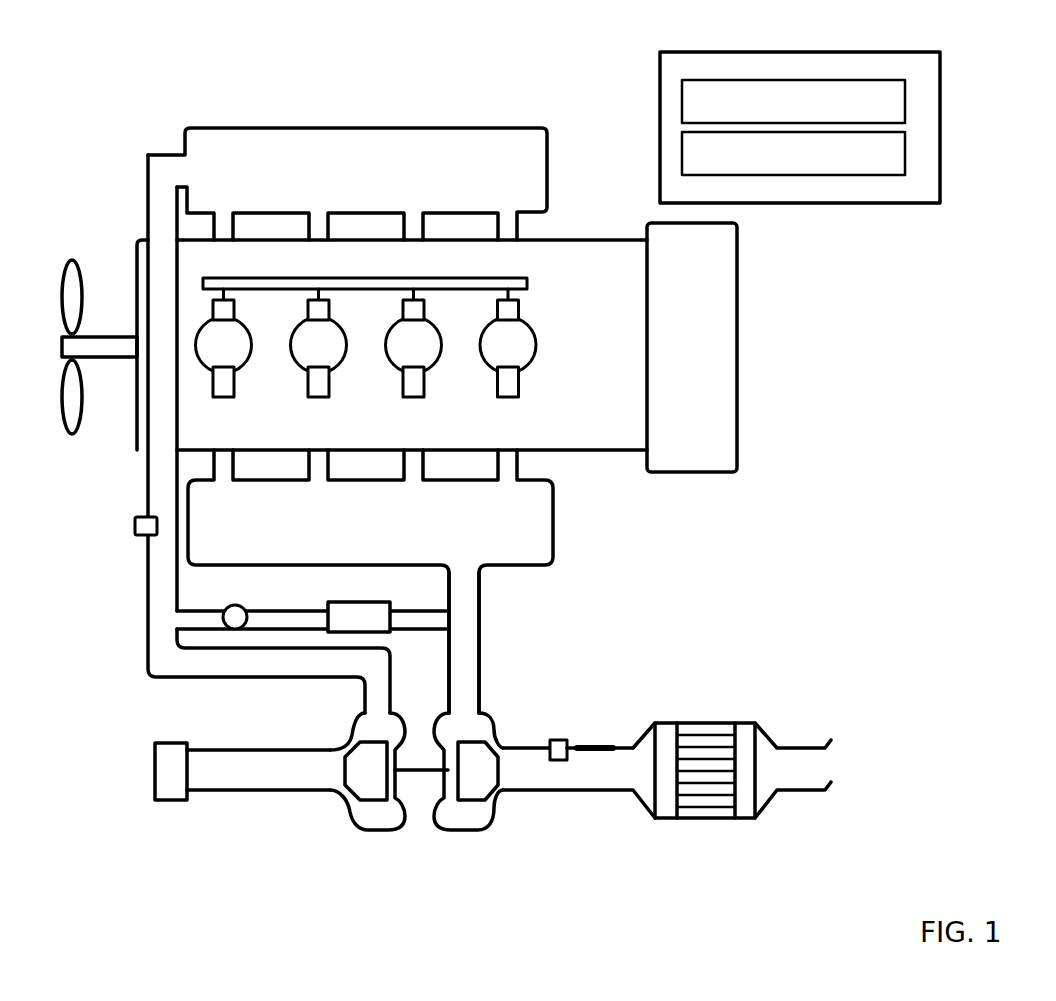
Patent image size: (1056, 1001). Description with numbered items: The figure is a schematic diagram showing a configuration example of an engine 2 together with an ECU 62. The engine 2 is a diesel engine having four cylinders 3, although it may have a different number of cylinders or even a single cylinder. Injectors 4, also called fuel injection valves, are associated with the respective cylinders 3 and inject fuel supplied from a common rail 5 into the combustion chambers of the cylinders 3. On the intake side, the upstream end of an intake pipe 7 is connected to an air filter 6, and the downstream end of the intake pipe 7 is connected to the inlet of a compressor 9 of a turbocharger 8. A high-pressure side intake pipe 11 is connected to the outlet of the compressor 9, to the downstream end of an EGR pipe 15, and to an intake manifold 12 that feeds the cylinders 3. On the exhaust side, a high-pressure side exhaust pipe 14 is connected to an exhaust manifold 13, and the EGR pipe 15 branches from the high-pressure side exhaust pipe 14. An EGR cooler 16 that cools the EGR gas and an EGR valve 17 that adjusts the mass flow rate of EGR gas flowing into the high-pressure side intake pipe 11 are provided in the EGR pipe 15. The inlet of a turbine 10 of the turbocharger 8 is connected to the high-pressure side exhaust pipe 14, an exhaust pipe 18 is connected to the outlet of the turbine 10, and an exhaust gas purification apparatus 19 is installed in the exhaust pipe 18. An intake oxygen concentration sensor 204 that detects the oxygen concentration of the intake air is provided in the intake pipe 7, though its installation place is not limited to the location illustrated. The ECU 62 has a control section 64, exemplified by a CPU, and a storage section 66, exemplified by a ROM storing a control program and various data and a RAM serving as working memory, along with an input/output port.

The engine 2 is at (110, 76).
The cylinder 3 is at (235, 392).
The injector 4 is at (212, 303).
The common rail 5 is at (222, 278).
The air filter 6 is at (163, 802).
The intake pipe 7 is at (240, 792).
The turbocharger 8 is at (427, 828).
The compressor 9 is at (343, 816).
The turbine 10 is at (478, 833).
The high-pressure side intake pipe 11 is at (236, 680).
The intake manifold 12 is at (276, 128).
The exhaust manifold 13 is at (553, 527).
The high-pressure side exhaust pipe 14 is at (479, 647).
The EGR pipe 15 is at (407, 605).
The EGR cooler 16 is at (388, 632).
The EGR valve 17 is at (223, 622).
The exhaust pipe 18 is at (545, 792).
The exhaust gas purification apparatus 19 is at (705, 820).
The ECU 62 is at (660, 100).
The control section 64 is at (905, 100).
The storage section 66 is at (905, 155).
The intake oxygen concentration sensor 204 is at (135, 525).